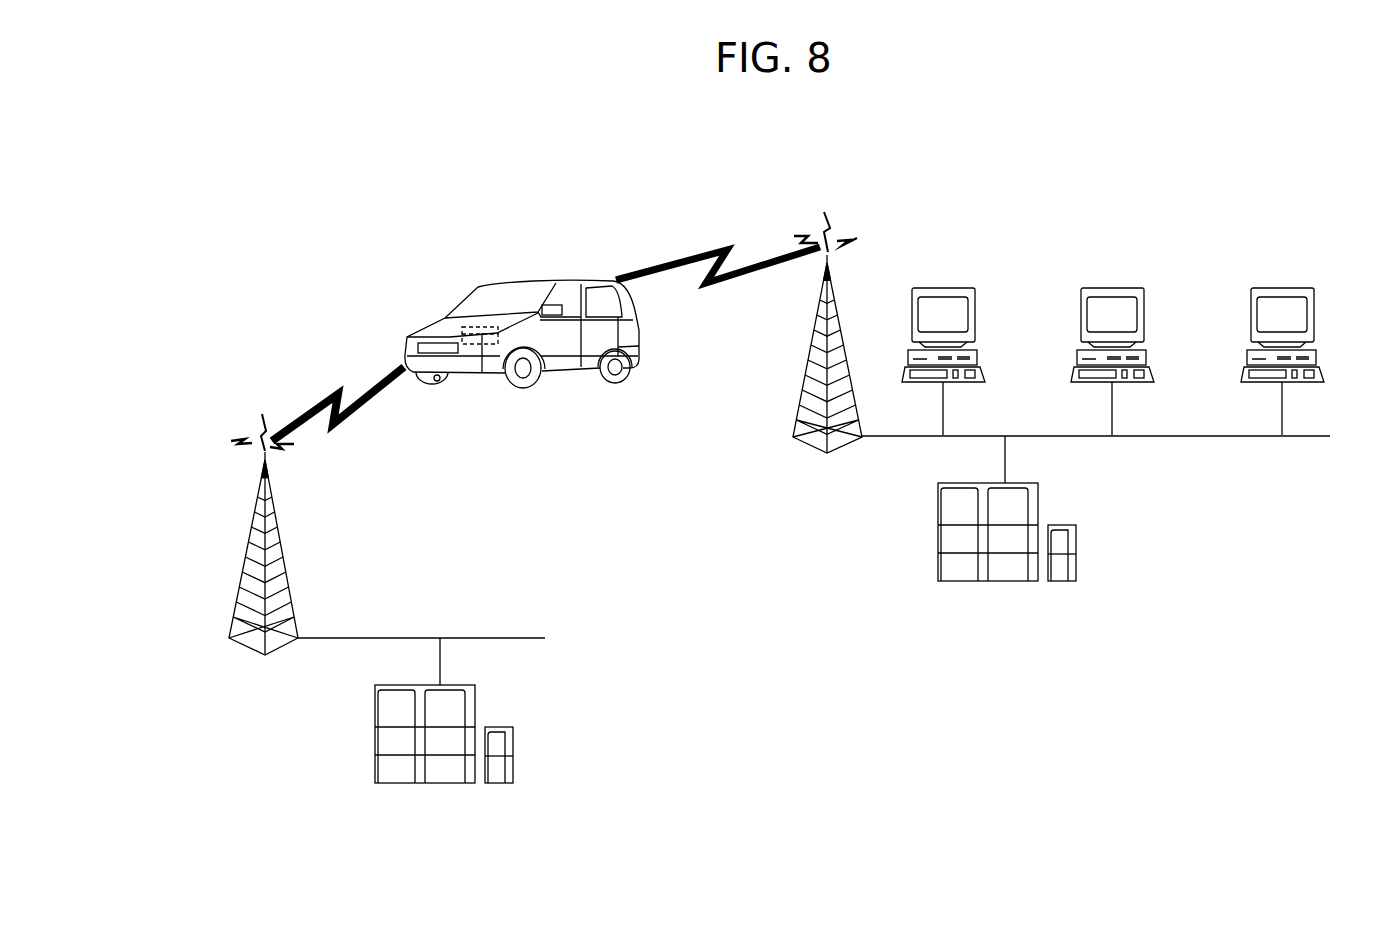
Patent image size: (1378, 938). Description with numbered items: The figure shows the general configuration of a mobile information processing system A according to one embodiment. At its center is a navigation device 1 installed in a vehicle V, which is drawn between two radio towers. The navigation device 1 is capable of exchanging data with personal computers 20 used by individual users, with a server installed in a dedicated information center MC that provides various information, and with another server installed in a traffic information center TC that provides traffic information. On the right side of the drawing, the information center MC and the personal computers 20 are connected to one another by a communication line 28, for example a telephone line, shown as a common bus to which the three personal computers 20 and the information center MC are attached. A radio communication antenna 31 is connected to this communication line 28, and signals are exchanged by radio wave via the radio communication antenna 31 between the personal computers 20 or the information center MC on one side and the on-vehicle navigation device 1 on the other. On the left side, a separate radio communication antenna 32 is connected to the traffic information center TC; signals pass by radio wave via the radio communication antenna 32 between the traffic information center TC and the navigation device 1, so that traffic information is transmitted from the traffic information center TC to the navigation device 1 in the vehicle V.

The mobile information processing system A is at (365, 198).
The vehicle V is at (512, 282).
The navigation device 1 is at (440, 316).
The personal computers 20 is at (943, 288).
The communication line 28 is at (1162, 437).
The radio communication antenna 31 is at (803, 380).
The radio communication antenna 32 is at (280, 537).
The information center MC is at (1008, 583).
The traffic information center TC is at (441, 784).